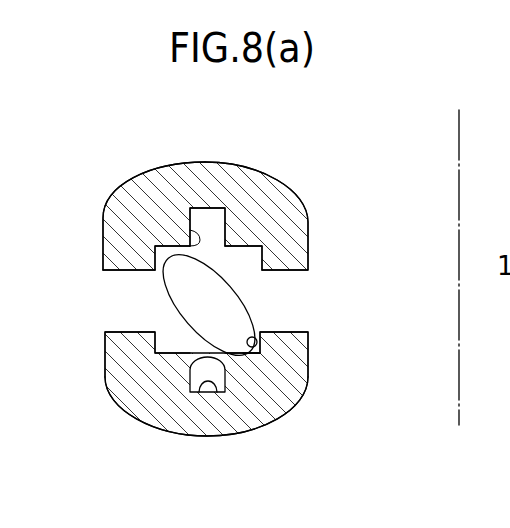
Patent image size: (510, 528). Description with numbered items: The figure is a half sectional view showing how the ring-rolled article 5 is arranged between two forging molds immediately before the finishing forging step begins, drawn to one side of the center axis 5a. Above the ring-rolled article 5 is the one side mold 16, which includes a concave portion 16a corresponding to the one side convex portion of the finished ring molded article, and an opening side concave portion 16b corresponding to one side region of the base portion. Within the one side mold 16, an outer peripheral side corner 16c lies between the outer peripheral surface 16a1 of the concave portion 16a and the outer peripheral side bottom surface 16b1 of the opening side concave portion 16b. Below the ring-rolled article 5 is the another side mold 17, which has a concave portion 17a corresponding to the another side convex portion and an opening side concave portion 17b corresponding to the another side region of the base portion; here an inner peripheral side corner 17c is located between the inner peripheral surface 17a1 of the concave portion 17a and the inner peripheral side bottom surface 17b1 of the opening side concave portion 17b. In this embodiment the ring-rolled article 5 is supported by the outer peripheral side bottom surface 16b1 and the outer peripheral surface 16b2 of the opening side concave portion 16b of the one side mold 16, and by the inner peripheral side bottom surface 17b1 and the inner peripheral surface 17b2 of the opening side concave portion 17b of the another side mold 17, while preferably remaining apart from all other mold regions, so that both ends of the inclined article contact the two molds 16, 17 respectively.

The ring-rolled article 5 is at (160, 313).
The center axis 5a is at (458, 132).
The one side mold 16 is at (94, 209).
The concave portion 16a is at (245, 226).
The outer peripheral surface 16a1 is at (191, 207).
The opening side concave portion 16b is at (252, 268).
The outer peripheral side bottom surface 16b1 is at (152, 244).
The outer peripheral surface 16b2 is at (162, 282).
The outer peripheral side corner 16c is at (165, 212).
The another side mold 17 is at (100, 411).
The concave portion 17a is at (215, 392).
The inner peripheral surface 17a1 is at (226, 384).
The opening side concave portion 17b is at (106, 368).
The inner peripheral side bottom surface 17b1 is at (300, 373).
The inner peripheral surface 17b2 is at (258, 316).
The inner peripheral side corner 17c is at (167, 393).